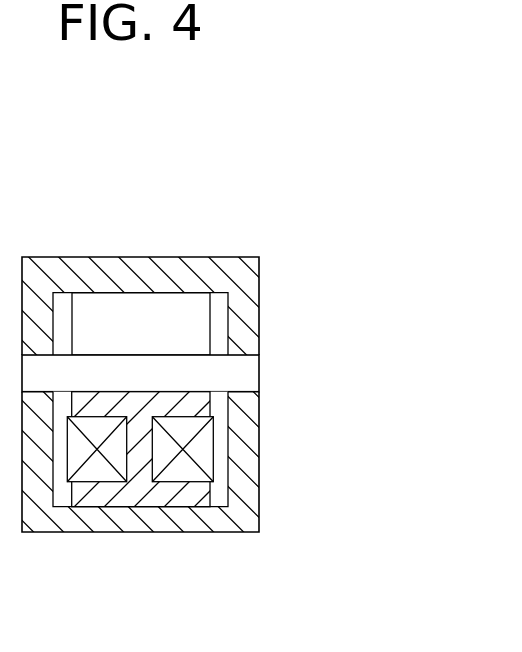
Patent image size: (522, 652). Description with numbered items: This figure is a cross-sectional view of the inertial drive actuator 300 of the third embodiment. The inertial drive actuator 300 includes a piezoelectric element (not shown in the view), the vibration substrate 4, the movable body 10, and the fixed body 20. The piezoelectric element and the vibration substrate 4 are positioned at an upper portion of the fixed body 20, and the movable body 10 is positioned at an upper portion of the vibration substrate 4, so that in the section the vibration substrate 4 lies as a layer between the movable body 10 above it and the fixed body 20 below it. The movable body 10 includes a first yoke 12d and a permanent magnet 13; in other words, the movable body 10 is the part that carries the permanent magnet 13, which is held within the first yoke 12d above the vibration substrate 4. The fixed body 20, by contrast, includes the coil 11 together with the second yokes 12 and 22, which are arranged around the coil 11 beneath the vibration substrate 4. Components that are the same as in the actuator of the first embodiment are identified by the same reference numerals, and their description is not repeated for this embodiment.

The inertial drive actuator 300 is at (187, 200).
The movable body 10 is at (398, 183).
The first yoke 12d is at (259, 264).
The permanent magnet 13 is at (210, 312).
The vibration substrate 4 is at (259, 372).
The fixed body 20 is at (398, 467).
The coil 11 is at (203, 449).
The second yoke 12 is at (210, 498).
The second yoke 22 is at (233, 532).